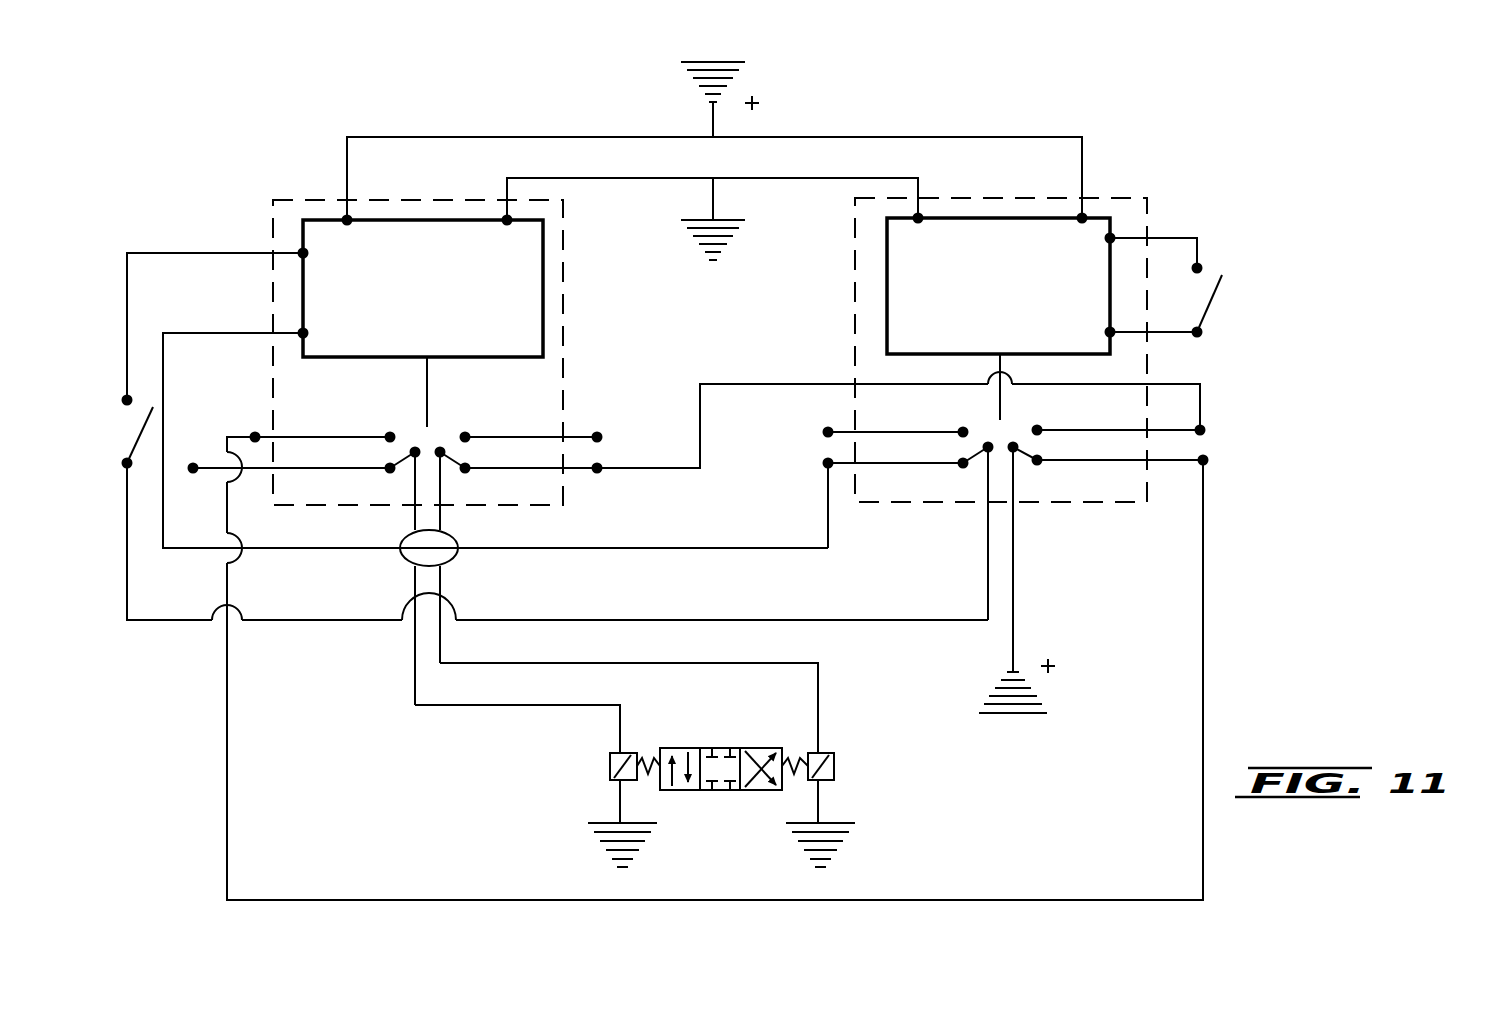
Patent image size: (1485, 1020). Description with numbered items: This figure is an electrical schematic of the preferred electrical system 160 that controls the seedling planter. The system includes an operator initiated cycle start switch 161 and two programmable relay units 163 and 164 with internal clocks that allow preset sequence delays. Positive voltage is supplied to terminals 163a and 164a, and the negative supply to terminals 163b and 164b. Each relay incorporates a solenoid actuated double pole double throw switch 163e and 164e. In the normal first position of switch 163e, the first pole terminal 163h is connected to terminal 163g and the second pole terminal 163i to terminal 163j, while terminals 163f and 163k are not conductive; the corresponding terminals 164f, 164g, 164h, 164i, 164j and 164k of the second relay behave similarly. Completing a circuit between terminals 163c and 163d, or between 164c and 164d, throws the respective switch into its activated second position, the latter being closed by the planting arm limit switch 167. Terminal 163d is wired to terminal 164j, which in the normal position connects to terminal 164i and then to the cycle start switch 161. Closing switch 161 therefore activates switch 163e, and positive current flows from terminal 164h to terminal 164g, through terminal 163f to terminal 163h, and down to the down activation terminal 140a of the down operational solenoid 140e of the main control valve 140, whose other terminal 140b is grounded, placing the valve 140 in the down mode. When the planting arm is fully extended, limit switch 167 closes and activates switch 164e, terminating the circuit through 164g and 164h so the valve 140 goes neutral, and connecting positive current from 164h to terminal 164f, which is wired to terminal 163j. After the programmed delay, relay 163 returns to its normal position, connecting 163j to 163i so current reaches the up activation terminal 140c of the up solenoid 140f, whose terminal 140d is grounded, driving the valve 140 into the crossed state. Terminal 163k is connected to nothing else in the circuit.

The main control valve 140 is at (727, 722).
The down activation terminal 140a is at (625, 740).
The solenoid terminal 140b is at (625, 810).
The up activation terminal 140c is at (822, 740).
The solenoid terminal 140d is at (820, 795).
The down operational solenoid 140e is at (608, 770).
The up solenoid 140f is at (836, 768).
The electrical system 160 is at (895, 115).
The cycle start switch 161 is at (141, 427).
The programmable relay unit 163 is at (568, 313).
The terminal 163a is at (348, 220).
The terminal 163b is at (510, 218).
The terminal 163c is at (303, 253).
The terminal 163d is at (303, 333).
The double pole double throw solenoid actuated switch 163e is at (548, 394).
The terminal 163f is at (255, 437).
The terminal 163g is at (193, 468).
The first pole terminal 163h is at (415, 452).
The second pole terminal 163i is at (440, 452).
The terminal 163j is at (597, 472).
The terminal 163k is at (597, 437).
The programmable relay unit 164 is at (853, 315).
The terminal 164a is at (1083, 218).
The terminal 164b is at (918, 218).
The terminal 164c is at (1110, 238).
The terminal 164d is at (1110, 336).
The double pole double throw solenoid actuated switch 164e is at (909, 409).
The terminal 164f is at (1200, 430).
The terminal 164g is at (1203, 460).
The first pole terminal 164h is at (1013, 447).
The second pole terminal 164i is at (988, 447).
The terminal 164j is at (828, 463).
The terminal 164k is at (828, 432).
The planting arm limit switch 167 is at (1213, 300).